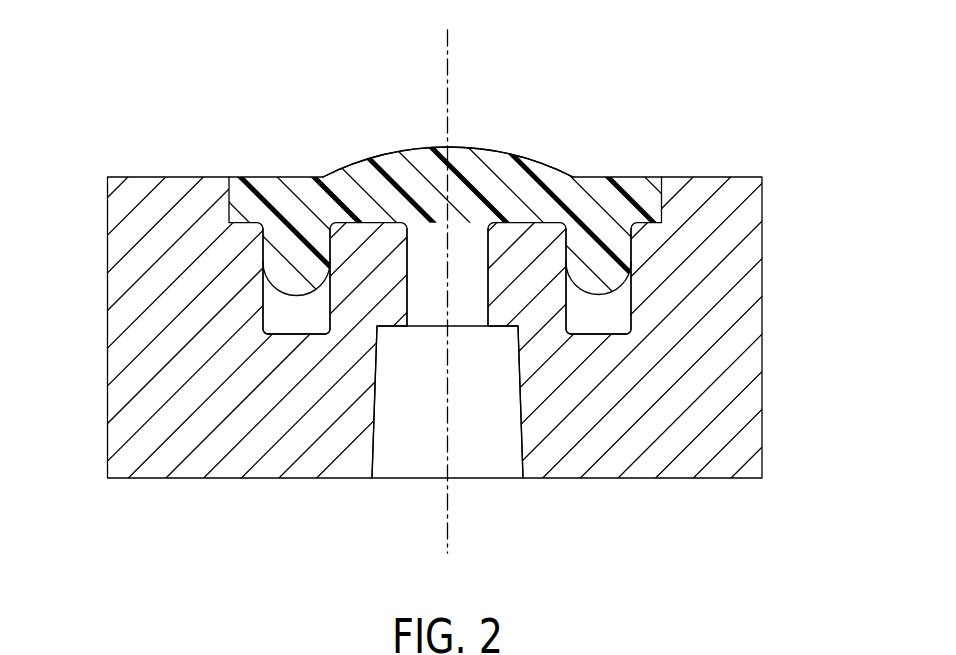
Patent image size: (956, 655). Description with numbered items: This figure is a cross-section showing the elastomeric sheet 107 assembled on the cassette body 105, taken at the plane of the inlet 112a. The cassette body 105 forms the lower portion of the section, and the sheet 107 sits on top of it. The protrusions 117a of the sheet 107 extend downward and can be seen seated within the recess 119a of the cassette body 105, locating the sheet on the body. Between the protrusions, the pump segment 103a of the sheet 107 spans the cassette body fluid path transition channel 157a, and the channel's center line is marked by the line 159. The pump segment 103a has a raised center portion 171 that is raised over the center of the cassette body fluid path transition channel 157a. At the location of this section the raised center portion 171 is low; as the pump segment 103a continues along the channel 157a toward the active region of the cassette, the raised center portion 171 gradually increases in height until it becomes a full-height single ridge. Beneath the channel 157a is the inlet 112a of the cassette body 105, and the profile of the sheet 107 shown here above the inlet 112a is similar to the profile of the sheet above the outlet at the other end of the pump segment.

The cassette body 105 is at (752, 360).
The pump segment 103a is at (387, 160).
The sheet 107 is at (330, 183).
The raised center portion 171 is at (460, 150).
The cassette body fluid path transition channel 157a is at (475, 233).
The inlet 112a is at (480, 468).
The protrusions 117a is at (293, 259).
The recess 119a is at (282, 319).
The center line 159 is at (453, 58).